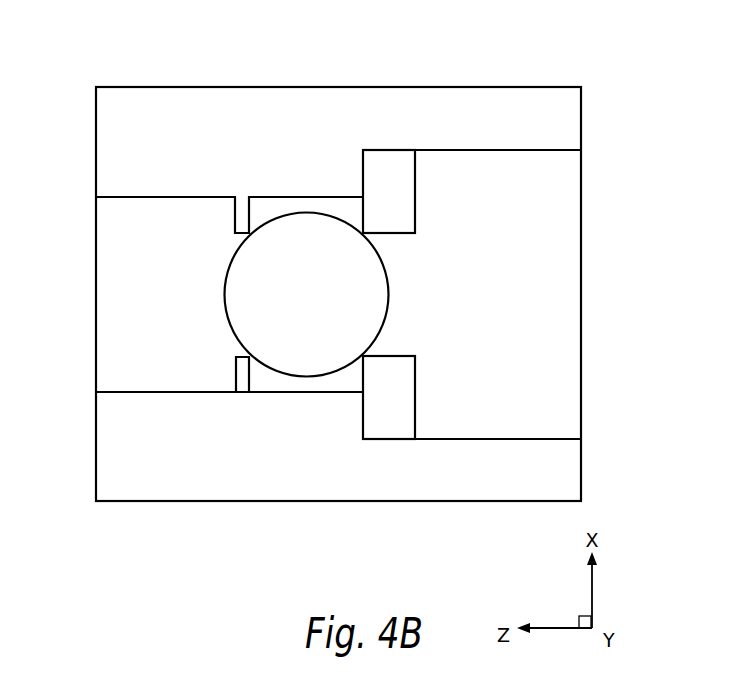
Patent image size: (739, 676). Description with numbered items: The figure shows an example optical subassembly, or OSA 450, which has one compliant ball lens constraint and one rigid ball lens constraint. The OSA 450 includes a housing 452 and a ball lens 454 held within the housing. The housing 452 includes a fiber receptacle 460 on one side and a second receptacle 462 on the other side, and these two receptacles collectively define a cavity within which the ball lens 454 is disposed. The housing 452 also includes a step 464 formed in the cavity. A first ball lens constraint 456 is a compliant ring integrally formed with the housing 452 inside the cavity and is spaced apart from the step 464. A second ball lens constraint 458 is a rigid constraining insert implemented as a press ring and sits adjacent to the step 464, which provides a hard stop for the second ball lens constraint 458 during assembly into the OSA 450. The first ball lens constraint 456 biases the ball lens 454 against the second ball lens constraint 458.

The OSA 450 is at (610, 101).
The housing 452 is at (204, 87).
The ball lens 454 is at (327, 300).
The first ball lens constraint 456 is at (236, 372).
The second ball lens constraint 458 is at (414, 400).
The fiber receptacle 460 is at (140, 318).
The second receptacle 462 is at (520, 278).
The step 464 is at (364, 415).